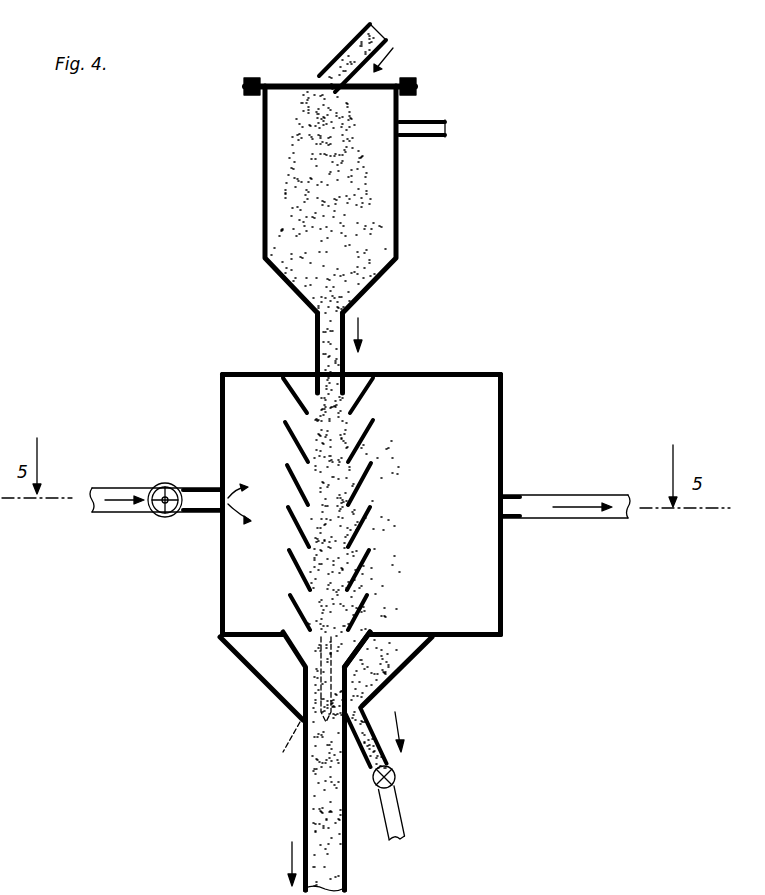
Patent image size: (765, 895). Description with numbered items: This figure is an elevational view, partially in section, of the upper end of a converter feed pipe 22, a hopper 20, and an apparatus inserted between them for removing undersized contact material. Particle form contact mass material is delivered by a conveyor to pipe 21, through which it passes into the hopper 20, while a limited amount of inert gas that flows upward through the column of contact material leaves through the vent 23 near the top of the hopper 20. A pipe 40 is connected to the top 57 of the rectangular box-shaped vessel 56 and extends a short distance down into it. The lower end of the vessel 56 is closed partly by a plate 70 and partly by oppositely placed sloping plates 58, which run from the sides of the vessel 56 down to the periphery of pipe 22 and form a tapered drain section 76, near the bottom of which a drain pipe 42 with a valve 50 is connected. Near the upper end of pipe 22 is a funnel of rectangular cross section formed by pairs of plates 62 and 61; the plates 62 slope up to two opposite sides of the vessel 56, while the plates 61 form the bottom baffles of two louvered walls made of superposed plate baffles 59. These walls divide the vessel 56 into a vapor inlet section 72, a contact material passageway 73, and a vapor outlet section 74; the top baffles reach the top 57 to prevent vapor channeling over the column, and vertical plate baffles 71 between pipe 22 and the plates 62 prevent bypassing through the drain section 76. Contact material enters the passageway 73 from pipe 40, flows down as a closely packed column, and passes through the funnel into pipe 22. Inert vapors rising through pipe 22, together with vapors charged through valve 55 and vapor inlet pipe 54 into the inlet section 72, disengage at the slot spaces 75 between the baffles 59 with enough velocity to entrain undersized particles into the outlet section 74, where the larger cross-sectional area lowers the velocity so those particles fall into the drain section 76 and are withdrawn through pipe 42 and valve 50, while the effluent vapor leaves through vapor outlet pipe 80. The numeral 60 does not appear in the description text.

The hopper 20 is at (263, 178).
The pipe 21 is at (350, 48).
The vertical pipe 22 is at (303, 823).
The vent 23 is at (427, 115).
The pipe 40 is at (315, 330).
The drain pipe 42 is at (402, 826).
The valve 50 is at (396, 776).
The vapor inlet pipe 54 is at (203, 487).
The valve 55 is at (165, 518).
The vessel 56 is at (221, 380).
The top 57 is at (452, 371).
The plates 58 is at (420, 650).
The plate baffles 59 is at (294, 600).
The right baffles 60 is at (388, 580).
The plates 61 is at (398, 667).
The plates 62 is at (372, 625).
The plate 70 is at (483, 640).
The vertical plate baffles 71 is at (297, 703).
The vapor inlet section 72 is at (241, 400).
The contact material passageway 73 is at (335, 448).
The vapor outlet section 74 is at (472, 441).
The slot spaces 75 is at (302, 462).
The drain section 76 is at (380, 690).
The vapor outlet pipe 80 is at (576, 495).